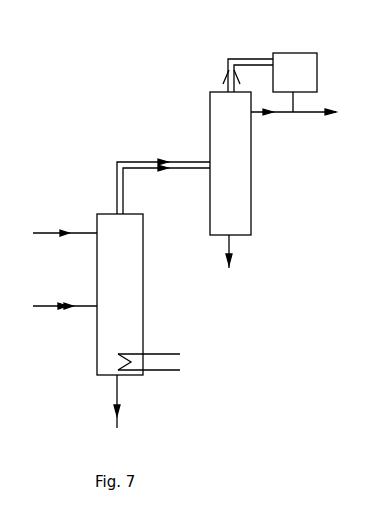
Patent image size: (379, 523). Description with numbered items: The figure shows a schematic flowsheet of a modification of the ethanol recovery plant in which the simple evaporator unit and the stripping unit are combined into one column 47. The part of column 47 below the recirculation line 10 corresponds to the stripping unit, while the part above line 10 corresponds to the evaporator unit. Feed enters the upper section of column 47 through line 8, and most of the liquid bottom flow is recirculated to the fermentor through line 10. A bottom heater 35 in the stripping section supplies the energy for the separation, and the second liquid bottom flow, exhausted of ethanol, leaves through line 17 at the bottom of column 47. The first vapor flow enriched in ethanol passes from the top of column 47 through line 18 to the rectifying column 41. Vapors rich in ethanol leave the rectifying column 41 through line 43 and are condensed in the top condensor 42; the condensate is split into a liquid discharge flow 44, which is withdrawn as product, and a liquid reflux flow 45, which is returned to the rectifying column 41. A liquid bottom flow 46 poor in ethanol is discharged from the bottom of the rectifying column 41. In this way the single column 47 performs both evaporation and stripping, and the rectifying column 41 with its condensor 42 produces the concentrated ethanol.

The line 8 is at (40, 231).
The recirculation line 10 is at (35, 306).
The bottom discharge line 17 is at (119, 397).
The vapor line 18 is at (130, 160).
The bottom heater 35 is at (165, 354).
The rectifying column 41 is at (251, 168).
The top condensor 42 is at (317, 67).
The vapor line 43 is at (245, 56).
The liquid discharge flow 44 is at (318, 115).
The liquid reflux flow 45 is at (272, 115).
The liquid bottom flow 46 is at (231, 252).
The column 47 is at (143, 282).